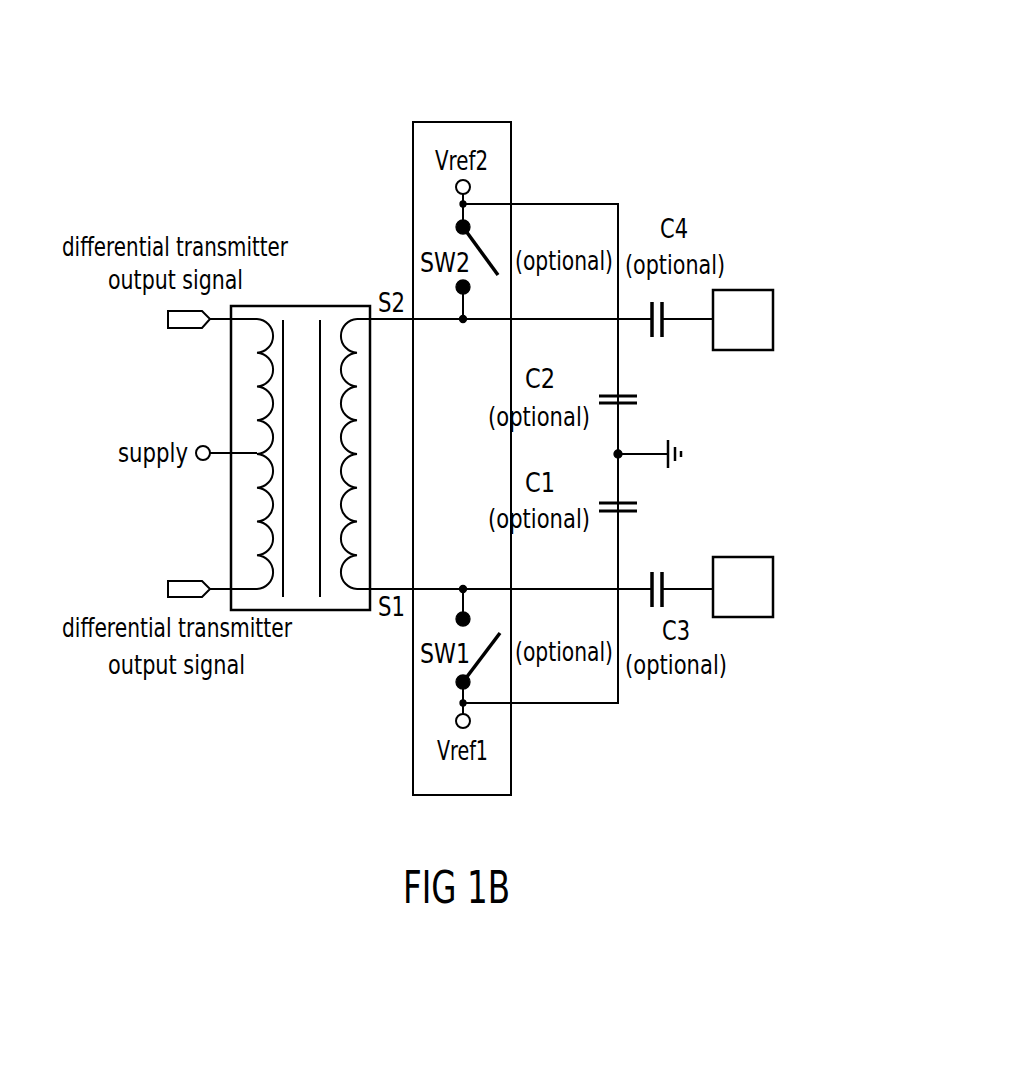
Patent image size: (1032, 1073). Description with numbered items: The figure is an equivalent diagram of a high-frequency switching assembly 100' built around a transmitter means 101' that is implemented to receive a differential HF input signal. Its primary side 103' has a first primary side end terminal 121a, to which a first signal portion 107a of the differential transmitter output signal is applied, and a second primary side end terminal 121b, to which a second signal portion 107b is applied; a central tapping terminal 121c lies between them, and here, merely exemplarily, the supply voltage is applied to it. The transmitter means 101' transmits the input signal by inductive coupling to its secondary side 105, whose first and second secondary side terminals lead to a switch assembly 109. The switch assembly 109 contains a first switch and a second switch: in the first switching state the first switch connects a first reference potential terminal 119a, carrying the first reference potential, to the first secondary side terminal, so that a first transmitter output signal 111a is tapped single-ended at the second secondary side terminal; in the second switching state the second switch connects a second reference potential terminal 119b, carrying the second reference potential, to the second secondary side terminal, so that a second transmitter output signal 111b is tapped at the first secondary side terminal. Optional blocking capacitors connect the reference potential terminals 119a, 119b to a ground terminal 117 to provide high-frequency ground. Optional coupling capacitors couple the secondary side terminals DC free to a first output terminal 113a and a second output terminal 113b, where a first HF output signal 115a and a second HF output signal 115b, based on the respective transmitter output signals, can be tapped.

The high-frequency switching assembly 100' is at (860, 102).
The transmitter means 101' is at (300, 402).
The primary side 103' is at (199, 454).
The secondary side 105 is at (370, 446).
The first signal portion 107a is at (225, 589).
The second signal portion 107b is at (222, 321).
The switch assembly 109 is at (464, 121).
The first transmitter output signal 111a is at (441, 321).
The second transmitter output signal 111b is at (433, 588).
The first output terminal 113a is at (773, 317).
The second output terminal 113b is at (773, 583).
The first HF output signal 115a is at (687, 322).
The second HF output signal 115b is at (677, 587).
The ground terminal 117 is at (640, 454).
The first reference potential terminal 119a is at (472, 721).
The second reference potential terminal 119b is at (472, 187).
The first primary side end terminal 121a is at (168, 590).
The second primary side end terminal 121b is at (168, 318).
The central tapping terminal 121c is at (198, 447).